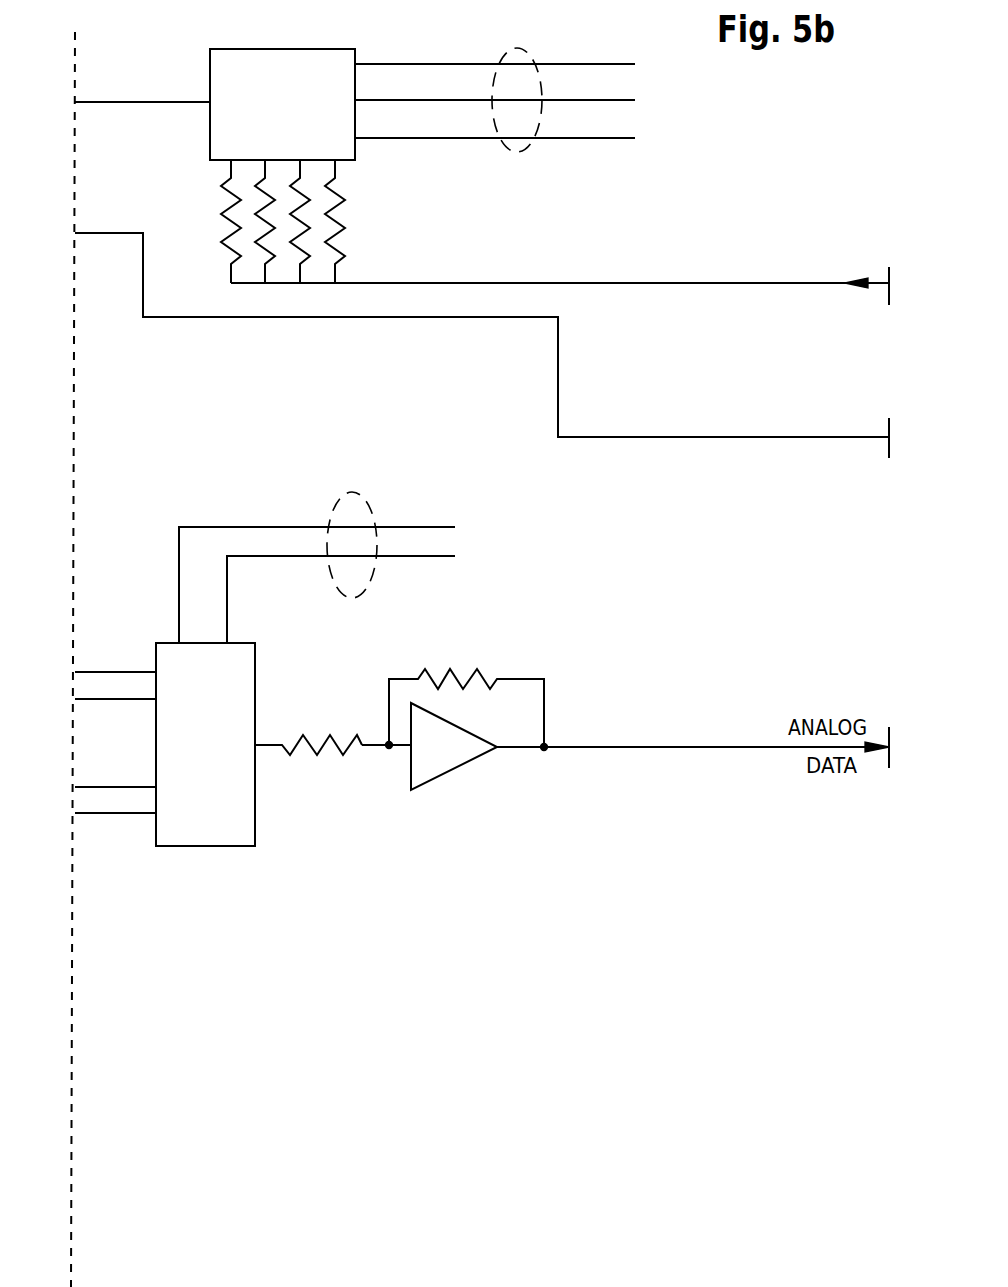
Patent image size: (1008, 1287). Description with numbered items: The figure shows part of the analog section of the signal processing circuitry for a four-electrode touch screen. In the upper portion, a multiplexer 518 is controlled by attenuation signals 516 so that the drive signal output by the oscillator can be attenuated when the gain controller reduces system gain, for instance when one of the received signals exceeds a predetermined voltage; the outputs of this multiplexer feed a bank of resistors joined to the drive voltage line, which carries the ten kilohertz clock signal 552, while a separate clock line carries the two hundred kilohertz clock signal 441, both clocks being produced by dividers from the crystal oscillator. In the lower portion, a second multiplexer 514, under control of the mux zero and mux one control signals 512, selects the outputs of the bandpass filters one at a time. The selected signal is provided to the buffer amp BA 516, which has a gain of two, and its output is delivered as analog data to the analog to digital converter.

The multiplexer 518 is at (210, 72).
The buffer amp 516 is at (532, 148).
The clock signal 552 is at (737, 283).
The clock signal 441 is at (670, 437).
The control signals mux 0, mux 1 512 is at (366, 594).
The multiplexer 514 is at (255, 822).